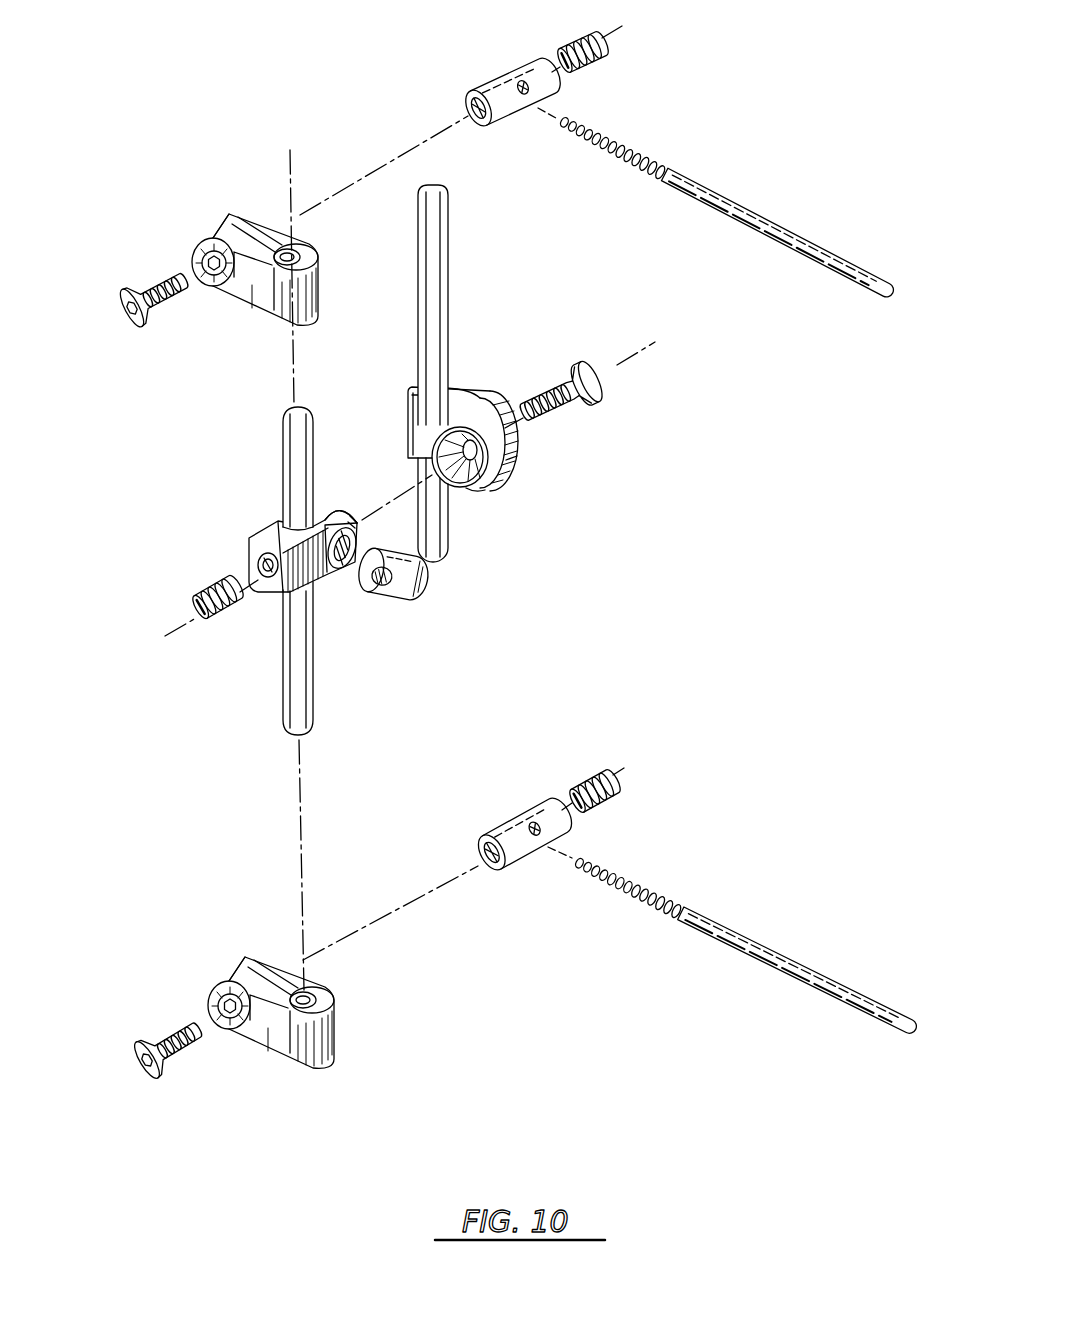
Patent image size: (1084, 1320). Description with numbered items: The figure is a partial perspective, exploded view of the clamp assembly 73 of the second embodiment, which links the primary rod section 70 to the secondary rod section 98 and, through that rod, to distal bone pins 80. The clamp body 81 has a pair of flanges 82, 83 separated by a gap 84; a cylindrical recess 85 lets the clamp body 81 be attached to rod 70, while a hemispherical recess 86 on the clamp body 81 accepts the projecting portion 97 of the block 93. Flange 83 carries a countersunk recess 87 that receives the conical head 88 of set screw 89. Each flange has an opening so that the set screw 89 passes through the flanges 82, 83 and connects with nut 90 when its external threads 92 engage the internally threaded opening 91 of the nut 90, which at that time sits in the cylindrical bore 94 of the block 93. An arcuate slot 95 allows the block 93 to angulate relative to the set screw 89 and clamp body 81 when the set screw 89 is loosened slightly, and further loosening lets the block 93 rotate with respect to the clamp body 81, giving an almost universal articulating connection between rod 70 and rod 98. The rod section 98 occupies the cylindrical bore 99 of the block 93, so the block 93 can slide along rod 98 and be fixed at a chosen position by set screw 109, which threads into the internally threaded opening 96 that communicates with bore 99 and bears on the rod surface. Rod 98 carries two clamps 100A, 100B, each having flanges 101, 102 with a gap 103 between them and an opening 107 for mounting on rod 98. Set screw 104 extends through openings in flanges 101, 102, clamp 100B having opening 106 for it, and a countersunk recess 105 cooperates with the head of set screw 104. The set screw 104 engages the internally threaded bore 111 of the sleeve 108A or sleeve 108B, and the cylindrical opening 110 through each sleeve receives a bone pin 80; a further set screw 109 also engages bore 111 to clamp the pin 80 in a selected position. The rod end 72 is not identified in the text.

The primary rod section 70 is at (449, 302).
The rod end 72 is at (450, 549).
The clamp assembly 73 is at (300, 110).
The distal bone pin 80 is at (780, 227).
The clamp body 81 is at (409, 424).
The flange 82 is at (500, 483).
The flange 83 is at (518, 465).
The gap 84 is at (468, 404).
The cylindrical recess 85 is at (453, 386).
The hemispherical recess 86 is at (440, 453).
The countersunk recess 87 is at (532, 448).
The conical head 88 is at (588, 370).
The set screw 89 is at (579, 416).
The nut 90 is at (420, 590).
The internally threaded opening 91 is at (386, 590).
The external threads 92 is at (552, 393).
The block 93 is at (273, 523).
The cylindrical bore 94 is at (340, 573).
The arcuate slot 95 is at (340, 503).
The internally threaded opening 96 is at (267, 577).
The projecting portion 97 is at (358, 522).
The secondary rod section 98 is at (286, 693).
The cylindrical bore 99 is at (296, 522).
The clamp 100A is at (268, 303).
The clamp 100B is at (277, 1037).
The flange 101 is at (227, 236).
The flange 102 is at (257, 222).
The gap 103 is at (230, 223).
The set screw 104 is at (137, 327).
The countersunk recess 105 is at (217, 288).
The opening 106 is at (197, 252).
The opening 107 is at (300, 250).
The internally threaded sleeve 108A is at (532, 64).
The sleeve 108B is at (522, 865).
The set screw 109 is at (200, 617).
The cylindrical opening 110 is at (521, 113).
The internally threaded bore 111 is at (470, 108).